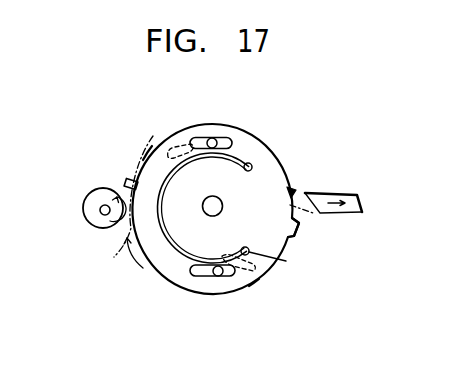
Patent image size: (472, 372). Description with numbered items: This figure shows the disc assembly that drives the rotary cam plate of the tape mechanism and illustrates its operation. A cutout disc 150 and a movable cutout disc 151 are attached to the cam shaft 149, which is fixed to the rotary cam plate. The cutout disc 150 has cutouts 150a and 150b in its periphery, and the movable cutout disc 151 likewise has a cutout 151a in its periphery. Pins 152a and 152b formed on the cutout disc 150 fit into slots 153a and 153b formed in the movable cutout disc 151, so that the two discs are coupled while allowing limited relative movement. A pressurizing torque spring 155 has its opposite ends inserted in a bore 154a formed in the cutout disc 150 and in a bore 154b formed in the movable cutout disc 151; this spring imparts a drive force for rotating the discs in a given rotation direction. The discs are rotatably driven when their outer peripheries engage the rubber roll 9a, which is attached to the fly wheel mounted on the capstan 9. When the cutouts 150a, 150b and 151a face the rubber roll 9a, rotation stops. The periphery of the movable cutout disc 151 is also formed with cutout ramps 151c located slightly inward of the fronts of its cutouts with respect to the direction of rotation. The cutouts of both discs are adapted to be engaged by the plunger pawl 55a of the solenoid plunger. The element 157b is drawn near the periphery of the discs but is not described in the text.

The capstan 9 is at (101, 212).
The rubber roll 9a is at (83, 204).
The plunger pawl 55a is at (358, 214).
The cam shaft 149 is at (214, 216).
The cutout disc 150 is at (269, 273).
The cutout 150a is at (114, 203).
The cutout 150b is at (296, 190).
The movable cutout disc 151 is at (289, 178).
The cutout 151a is at (130, 180).
The cutout ramps 151c is at (146, 154).
The pin 152a is at (212, 138).
The pin 152b is at (218, 276).
The slot 153a is at (224, 144).
The slot 153b is at (194, 276).
The bore 154a is at (253, 167).
The bore 154b is at (281, 258).
The pressurizing torque spring 155 is at (160, 258).
The projection 157b is at (292, 224).